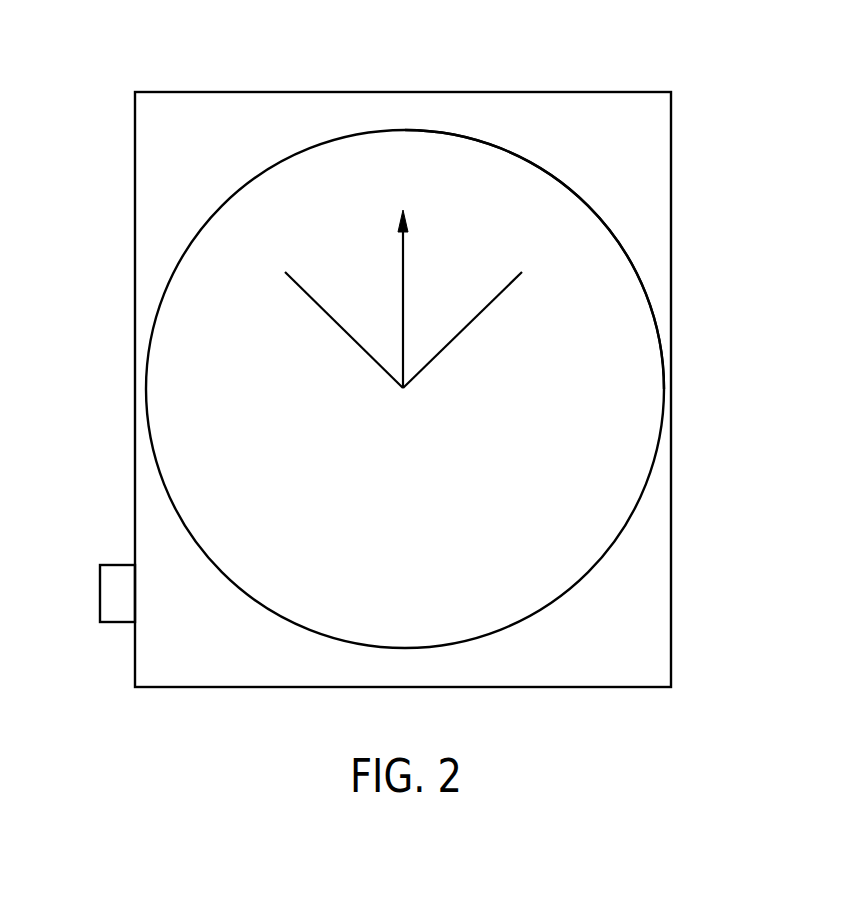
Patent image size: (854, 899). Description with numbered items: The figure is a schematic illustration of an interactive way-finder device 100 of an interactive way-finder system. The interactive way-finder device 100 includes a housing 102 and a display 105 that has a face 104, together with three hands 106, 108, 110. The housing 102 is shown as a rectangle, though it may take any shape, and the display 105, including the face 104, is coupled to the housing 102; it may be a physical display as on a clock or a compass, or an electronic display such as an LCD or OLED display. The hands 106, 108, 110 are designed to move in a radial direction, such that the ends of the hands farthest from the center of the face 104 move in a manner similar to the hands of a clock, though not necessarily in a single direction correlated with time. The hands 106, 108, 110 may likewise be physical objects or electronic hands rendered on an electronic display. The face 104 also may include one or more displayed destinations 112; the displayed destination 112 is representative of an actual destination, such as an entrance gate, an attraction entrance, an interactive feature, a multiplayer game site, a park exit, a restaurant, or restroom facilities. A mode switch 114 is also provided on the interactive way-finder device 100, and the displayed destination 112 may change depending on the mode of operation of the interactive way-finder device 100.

The interactive way-finder device 100 is at (586, 40).
The housing 102 is at (671, 190).
The face 104 is at (625, 305).
The display 105 is at (586, 194).
The hand 106 is at (465, 333).
The hand 108 is at (342, 333).
The hand 110 is at (403, 307).
The displayed destination 112 is at (460, 182).
The mode switch 114 is at (100, 595).